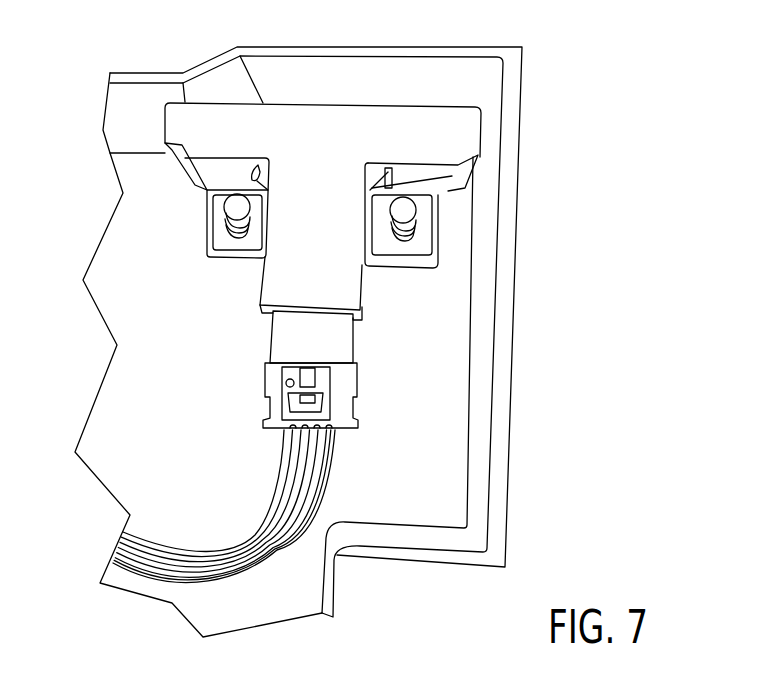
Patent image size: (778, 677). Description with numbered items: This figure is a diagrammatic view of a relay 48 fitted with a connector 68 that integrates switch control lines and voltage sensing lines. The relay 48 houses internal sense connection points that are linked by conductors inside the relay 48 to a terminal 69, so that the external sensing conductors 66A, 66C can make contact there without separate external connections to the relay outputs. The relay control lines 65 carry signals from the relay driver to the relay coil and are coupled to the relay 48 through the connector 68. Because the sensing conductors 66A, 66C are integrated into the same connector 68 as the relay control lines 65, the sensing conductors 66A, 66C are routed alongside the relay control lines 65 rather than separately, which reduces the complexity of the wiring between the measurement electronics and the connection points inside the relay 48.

The relay 48 is at (332, 133).
The terminal 69 is at (337, 353).
The connector 68 is at (343, 393).
The relay control lines 65 is at (287, 444).
The sensing conductor 66A is at (297, 463).
The sensing conductor 66C is at (308, 463).